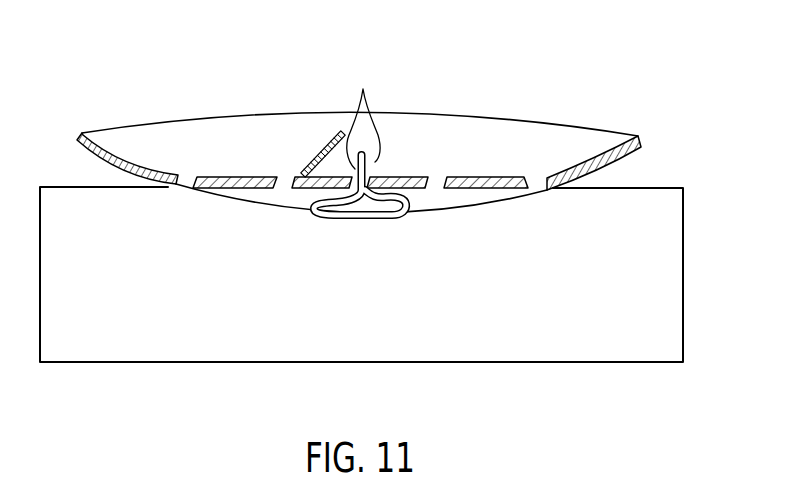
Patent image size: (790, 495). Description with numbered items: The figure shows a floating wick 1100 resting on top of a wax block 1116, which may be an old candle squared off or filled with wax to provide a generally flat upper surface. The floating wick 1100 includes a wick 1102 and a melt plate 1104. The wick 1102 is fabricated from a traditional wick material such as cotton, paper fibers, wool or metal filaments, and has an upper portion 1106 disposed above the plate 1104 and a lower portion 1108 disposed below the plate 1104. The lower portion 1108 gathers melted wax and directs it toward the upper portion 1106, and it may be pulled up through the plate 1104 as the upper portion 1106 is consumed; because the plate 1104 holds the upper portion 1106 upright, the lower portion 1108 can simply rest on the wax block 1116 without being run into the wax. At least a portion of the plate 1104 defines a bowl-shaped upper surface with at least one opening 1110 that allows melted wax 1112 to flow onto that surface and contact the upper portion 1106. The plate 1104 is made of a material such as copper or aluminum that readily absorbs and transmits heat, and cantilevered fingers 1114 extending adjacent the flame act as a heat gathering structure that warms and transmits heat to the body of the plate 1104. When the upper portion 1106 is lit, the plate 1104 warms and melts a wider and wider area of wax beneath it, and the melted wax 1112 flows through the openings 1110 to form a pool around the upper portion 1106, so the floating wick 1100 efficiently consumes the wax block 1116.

The floating wick 1100 is at (611, 127).
The wick 1102 is at (360, 222).
The melt plate 1104 is at (623, 152).
The upper portion 1106 is at (375, 162).
The lower portion 1108 is at (401, 215).
The opening 1110 is at (182, 186).
The melted wax 1112 is at (285, 177).
The cantilevered fingers 1114 is at (334, 139).
The wax block 1116 is at (683, 310).